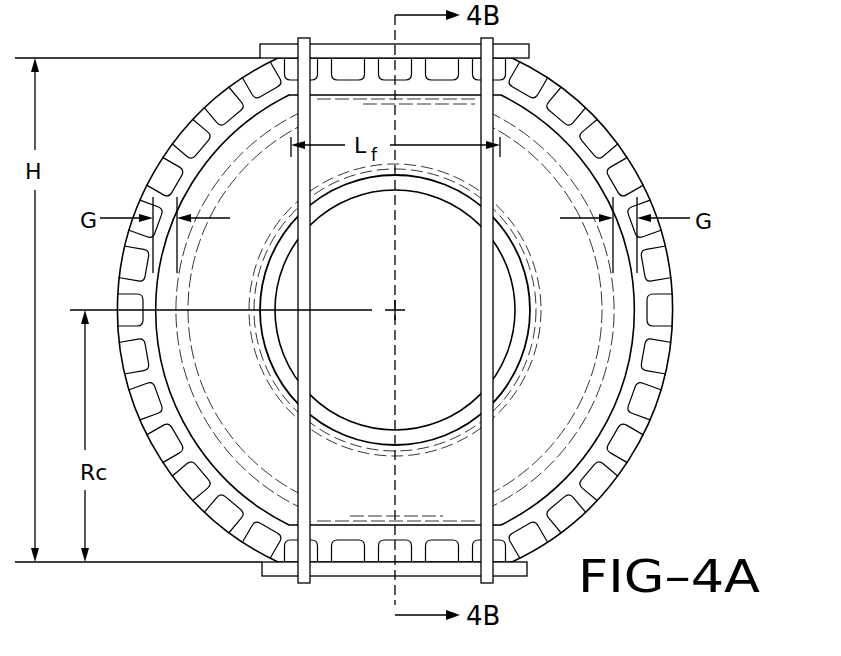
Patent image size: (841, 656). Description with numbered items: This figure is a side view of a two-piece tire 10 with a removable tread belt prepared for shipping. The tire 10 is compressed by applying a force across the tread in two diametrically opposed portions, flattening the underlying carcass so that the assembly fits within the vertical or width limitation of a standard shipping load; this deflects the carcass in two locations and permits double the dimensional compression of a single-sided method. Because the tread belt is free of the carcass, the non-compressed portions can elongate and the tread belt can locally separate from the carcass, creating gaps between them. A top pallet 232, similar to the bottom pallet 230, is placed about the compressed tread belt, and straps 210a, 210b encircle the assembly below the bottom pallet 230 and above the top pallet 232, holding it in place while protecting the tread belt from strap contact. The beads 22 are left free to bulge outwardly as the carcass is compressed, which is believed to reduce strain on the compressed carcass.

The tire 10 is at (534, 182).
The beads 22 is at (402, 442).
The strap 210a is at (305, 470).
The strap 210b is at (487, 470).
The bottom pallet 230 is at (262, 568).
The top pallet 232 is at (332, 50).